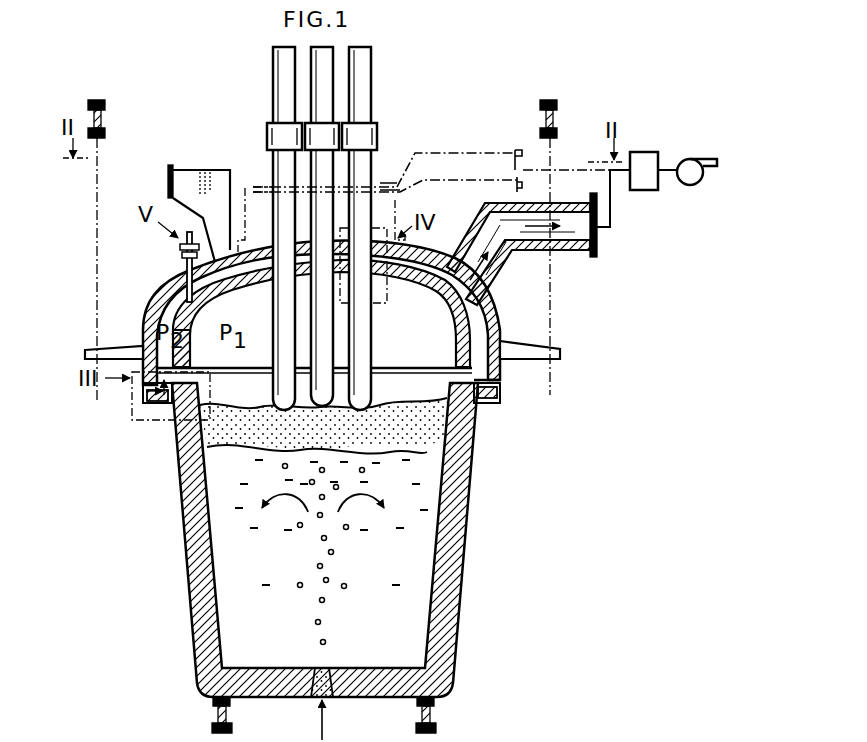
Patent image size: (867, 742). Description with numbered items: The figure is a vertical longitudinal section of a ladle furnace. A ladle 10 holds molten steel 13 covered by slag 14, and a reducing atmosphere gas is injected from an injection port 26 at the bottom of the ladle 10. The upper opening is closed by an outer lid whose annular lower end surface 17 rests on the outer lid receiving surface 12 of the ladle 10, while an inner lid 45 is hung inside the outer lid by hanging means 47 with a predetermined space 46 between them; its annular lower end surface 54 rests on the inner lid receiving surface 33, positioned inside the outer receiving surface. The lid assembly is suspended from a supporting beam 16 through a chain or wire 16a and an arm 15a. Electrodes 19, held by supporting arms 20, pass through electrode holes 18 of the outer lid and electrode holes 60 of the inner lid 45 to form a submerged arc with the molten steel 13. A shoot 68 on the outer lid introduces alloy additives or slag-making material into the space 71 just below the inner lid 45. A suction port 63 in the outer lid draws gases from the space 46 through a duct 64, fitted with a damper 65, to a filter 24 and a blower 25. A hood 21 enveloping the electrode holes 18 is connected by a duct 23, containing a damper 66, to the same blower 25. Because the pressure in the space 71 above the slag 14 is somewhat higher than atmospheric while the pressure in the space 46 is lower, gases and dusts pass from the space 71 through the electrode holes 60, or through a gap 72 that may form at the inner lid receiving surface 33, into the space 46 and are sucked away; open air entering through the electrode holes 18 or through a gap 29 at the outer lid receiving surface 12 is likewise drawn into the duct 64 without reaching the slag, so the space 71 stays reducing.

The ladle 10 is at (440, 575).
The outer lid receiving surface 12 is at (490, 393).
The molten steel 13 is at (240, 575).
The slag 14 is at (215, 452).
The arm 15a is at (113, 350).
The supporting beam 16 is at (104, 120).
The chain or wire 16a is at (99, 173).
The annular lower end surface of the outer lid 17 is at (498, 385).
The electrode holes 18 is at (262, 250).
The electrodes 19 is at (356, 80).
The supporting arms 20 is at (358, 128).
The hood 21 is at (268, 187).
The duct 23 is at (497, 178).
The filter 24 is at (645, 190).
The blower 25 is at (688, 186).
The injection port 26 is at (312, 698).
The gap 29 is at (145, 392).
The inner lid receiving surface 33 is at (480, 404).
The inner lid 45 is at (177, 308).
The space 46 is at (180, 286).
The hanging means 47 is at (181, 262).
The annular lower end surface of the inner lid 54 is at (433, 367).
The electrode holes of the inner lid 60 is at (372, 292).
The suction port 63 is at (468, 283).
The duct 64 is at (563, 250).
The damper 65 is at (553, 228).
The damper 66 is at (458, 170).
The shoot 68 is at (193, 173).
The space 71 is at (215, 438).
The gap 72 is at (180, 395).